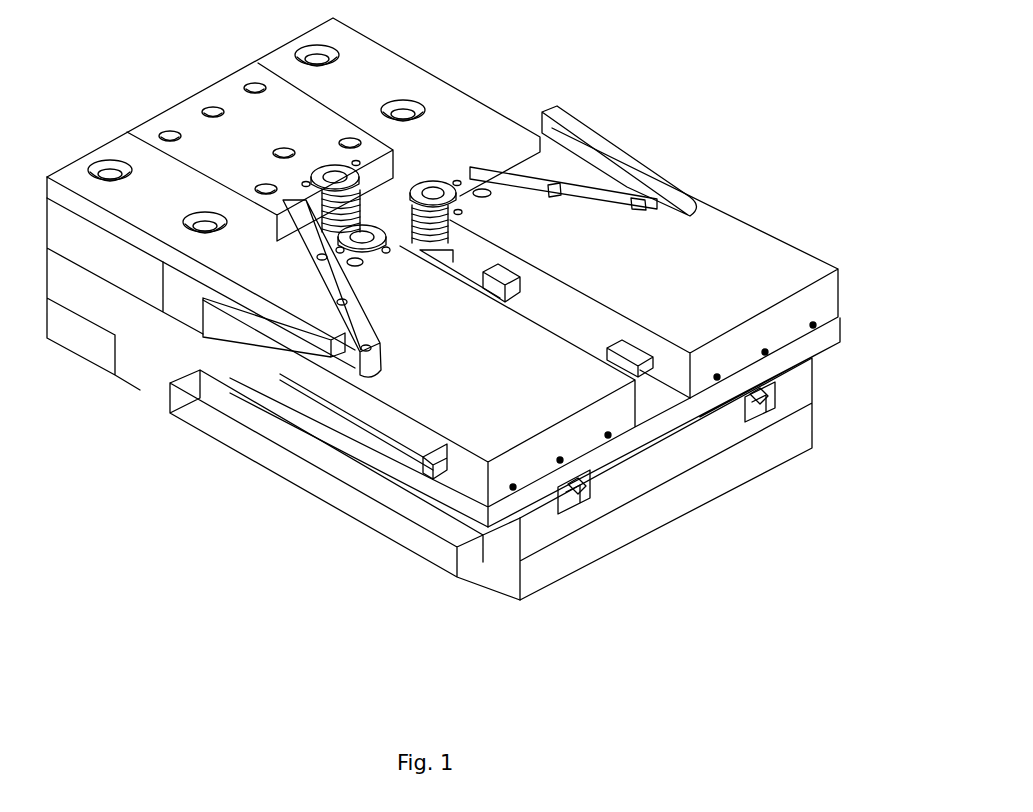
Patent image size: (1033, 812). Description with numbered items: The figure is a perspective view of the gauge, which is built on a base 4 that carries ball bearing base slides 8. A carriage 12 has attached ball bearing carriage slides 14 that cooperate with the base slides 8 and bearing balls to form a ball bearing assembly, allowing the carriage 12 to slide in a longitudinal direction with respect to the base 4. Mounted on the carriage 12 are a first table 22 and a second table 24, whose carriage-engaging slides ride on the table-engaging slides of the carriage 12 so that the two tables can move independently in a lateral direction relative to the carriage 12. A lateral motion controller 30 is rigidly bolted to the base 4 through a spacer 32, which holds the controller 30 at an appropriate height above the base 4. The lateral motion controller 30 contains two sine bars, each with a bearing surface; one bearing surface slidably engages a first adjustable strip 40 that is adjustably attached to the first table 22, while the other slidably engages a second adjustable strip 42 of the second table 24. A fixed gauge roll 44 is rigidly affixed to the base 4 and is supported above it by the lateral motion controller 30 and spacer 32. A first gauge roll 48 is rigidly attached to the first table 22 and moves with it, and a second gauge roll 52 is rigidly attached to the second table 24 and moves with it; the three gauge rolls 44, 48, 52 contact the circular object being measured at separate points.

The base 4 is at (790, 394).
The ball bearing base slides 8 is at (568, 507).
The carriage 12 is at (800, 348).
The ball bearing carriage slides 14 is at (588, 495).
The first table 22 is at (480, 423).
The second table 24 is at (693, 260).
The lateral motion controller 30 is at (153, 115).
The spacer 32 is at (100, 263).
The first adjustable strip 40 is at (362, 365).
The second adjustable strip 42 is at (627, 190).
The fixed gauge roll 44 is at (313, 198).
The first gauge roll 48 is at (362, 247).
The second gauge roll 52 is at (477, 167).